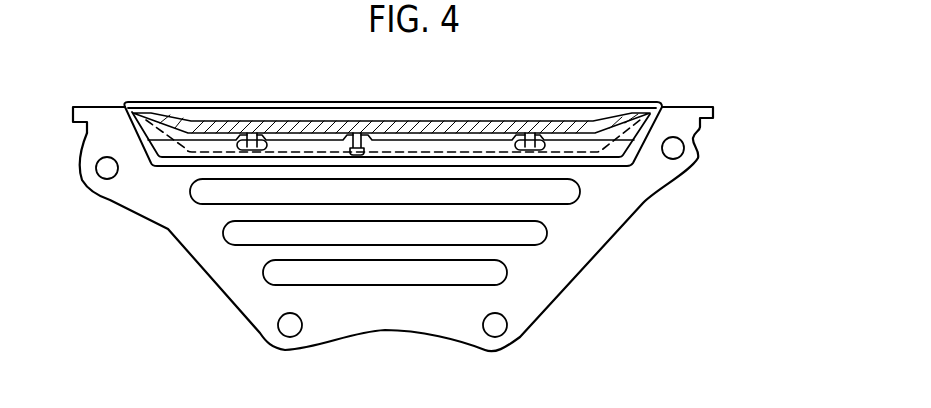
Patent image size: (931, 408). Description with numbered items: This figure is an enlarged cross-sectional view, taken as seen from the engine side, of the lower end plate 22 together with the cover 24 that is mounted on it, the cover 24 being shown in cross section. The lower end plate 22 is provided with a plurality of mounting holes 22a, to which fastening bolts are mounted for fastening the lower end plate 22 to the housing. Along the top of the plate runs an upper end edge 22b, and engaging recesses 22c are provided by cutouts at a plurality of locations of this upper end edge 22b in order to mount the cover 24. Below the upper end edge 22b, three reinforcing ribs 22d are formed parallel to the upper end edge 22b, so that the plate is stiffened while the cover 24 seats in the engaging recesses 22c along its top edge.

The cover 24 is at (441, 92).
The lower end plate 22 is at (533, 288).
The mounting holes 22a is at (111, 174).
The upper end edge 22b is at (692, 106).
The engaging recesses 22c is at (246, 152).
The reinforcing ribs 22d is at (282, 273).